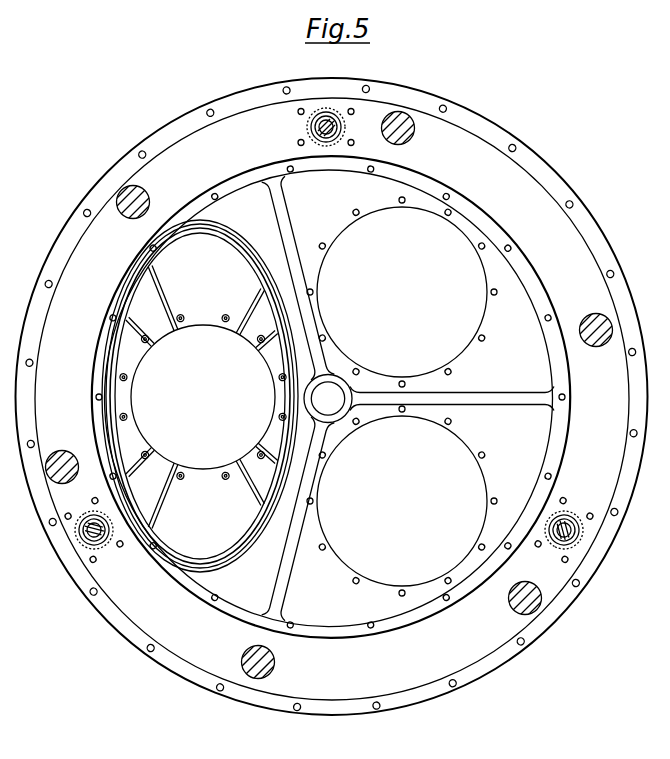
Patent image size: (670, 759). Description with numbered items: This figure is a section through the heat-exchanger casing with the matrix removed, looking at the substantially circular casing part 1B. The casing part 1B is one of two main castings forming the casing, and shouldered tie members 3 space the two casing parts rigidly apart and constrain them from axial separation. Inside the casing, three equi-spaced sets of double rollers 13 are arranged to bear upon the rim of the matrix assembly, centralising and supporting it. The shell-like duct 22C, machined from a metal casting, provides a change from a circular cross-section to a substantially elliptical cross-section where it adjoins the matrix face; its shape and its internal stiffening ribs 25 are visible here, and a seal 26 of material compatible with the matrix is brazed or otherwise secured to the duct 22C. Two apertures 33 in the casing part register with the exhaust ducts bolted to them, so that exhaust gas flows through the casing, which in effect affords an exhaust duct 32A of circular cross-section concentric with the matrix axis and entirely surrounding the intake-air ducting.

The casing part 1B is at (537, 189).
The shouldered tie members 3 is at (403, 131).
The double rollers 13 is at (310, 127).
The shell-like duct 22C is at (234, 252).
The internal stiffening ribs 25 is at (214, 386).
The seal 26 is at (271, 264).
The exhaust duct 32A is at (552, 352).
The apertures 33 is at (416, 314).